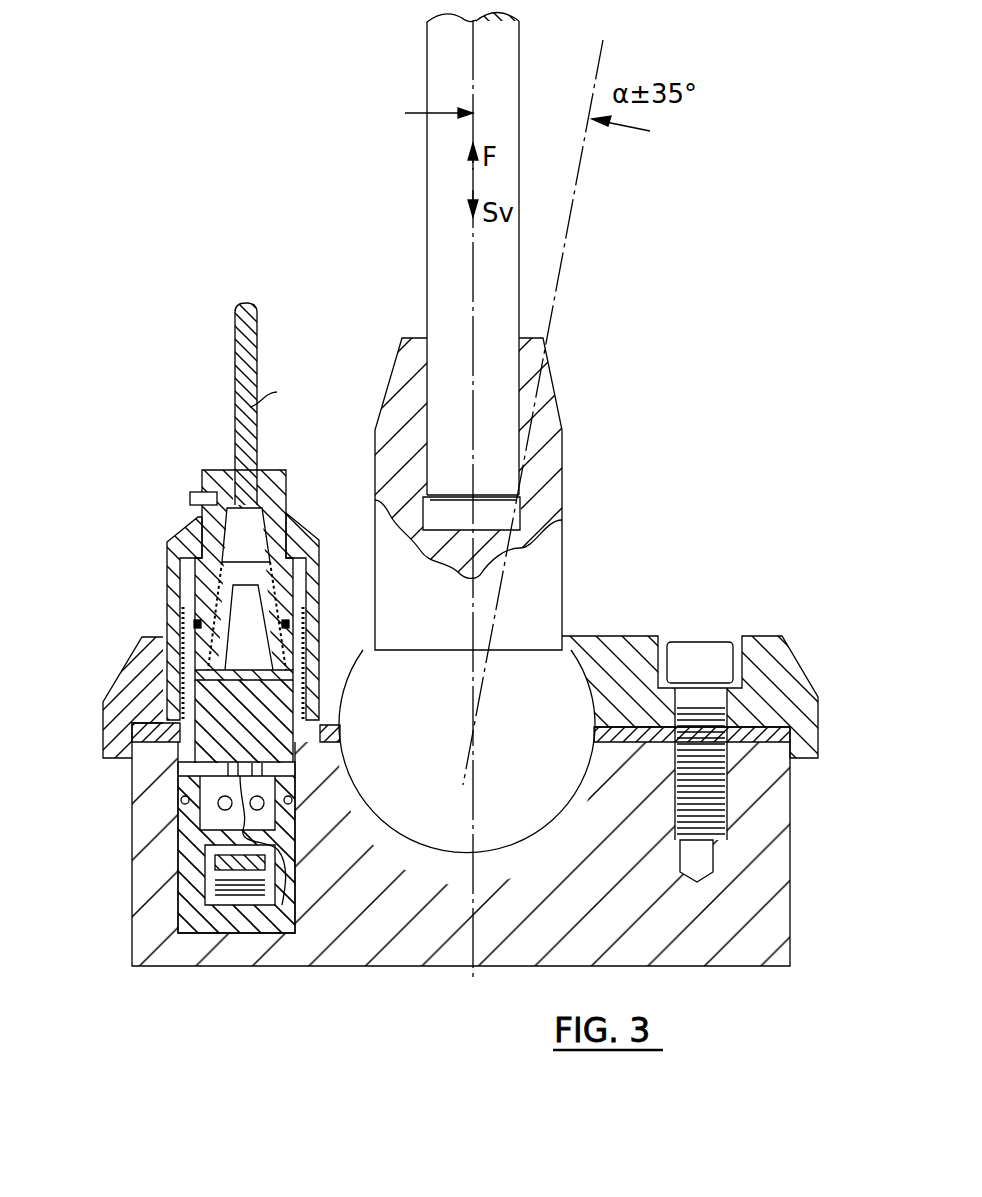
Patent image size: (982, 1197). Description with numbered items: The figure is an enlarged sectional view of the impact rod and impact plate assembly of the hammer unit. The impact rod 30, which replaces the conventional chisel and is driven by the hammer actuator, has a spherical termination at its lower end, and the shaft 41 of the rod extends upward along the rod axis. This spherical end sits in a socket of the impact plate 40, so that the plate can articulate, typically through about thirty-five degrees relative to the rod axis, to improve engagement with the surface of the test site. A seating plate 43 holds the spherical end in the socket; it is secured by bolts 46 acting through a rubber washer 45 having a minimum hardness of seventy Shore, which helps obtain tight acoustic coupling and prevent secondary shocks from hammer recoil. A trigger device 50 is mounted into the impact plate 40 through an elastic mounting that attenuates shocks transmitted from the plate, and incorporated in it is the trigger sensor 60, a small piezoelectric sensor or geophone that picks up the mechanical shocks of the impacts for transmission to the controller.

The impact rod 30 is at (545, 405).
The impact plate 40 is at (780, 898).
The shaft / pin 41 is at (505, 302).
The seating plate 43 is at (785, 650).
The rubber washer 45 is at (775, 735).
The bolts 46 is at (710, 650).
The trigger device 50 is at (102, 370).
The trigger sensor 60 is at (210, 893).